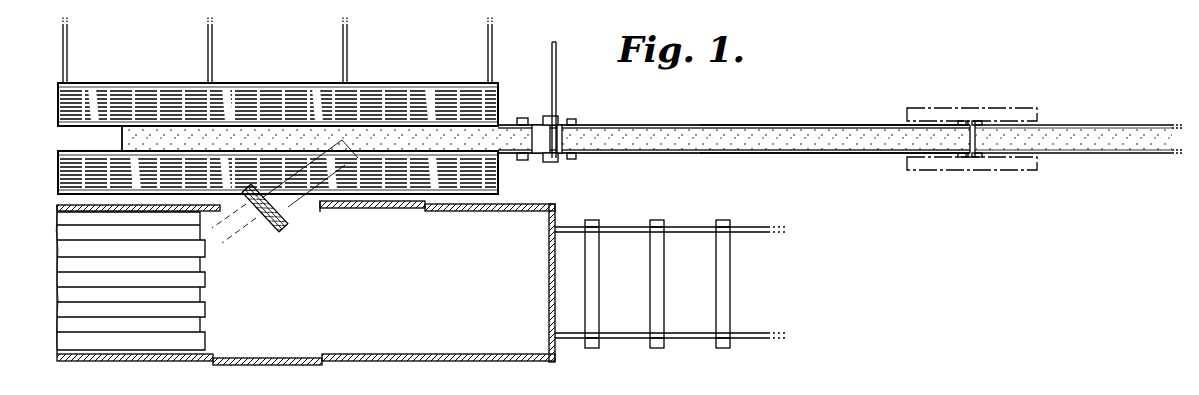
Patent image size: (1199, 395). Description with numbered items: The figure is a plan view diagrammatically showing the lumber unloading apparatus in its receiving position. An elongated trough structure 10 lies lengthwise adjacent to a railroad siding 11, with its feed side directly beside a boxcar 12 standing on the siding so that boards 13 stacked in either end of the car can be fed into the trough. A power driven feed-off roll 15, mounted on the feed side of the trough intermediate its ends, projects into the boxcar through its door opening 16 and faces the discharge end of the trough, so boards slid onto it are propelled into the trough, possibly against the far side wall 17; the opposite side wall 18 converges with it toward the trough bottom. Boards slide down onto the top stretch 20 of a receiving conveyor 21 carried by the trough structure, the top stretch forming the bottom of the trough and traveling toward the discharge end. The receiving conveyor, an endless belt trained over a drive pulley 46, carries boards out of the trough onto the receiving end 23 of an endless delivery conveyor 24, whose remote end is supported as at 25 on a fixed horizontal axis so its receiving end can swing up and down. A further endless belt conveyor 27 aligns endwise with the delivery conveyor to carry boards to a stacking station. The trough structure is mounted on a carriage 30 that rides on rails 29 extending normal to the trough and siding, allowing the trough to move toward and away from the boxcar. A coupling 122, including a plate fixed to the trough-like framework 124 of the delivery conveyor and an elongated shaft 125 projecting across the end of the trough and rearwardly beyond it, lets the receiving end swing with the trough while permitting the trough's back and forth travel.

The trough structure 10 is at (394, 65).
The railroad siding 11 is at (635, 210).
The boxcar 12 is at (426, 295).
The boards 13 is at (195, 307).
The feed-off roll 15 is at (268, 228).
The door opening 16 is at (316, 209).
The side wall 17 is at (290, 94).
The side wall 18 is at (497, 178).
The top stretch 20 is at (233, 133).
The receiving conveyor 21 is at (121, 143).
The receiving end 23 is at (607, 132).
The delivery conveyor 24 is at (730, 104).
The support 25 is at (938, 112).
The endless belt conveyor 27 is at (1100, 111).
The rails 29 is at (68, 43).
The carriage 30 is at (509, 65).
The drive pulley 46 is at (522, 160).
The coupling 122 is at (572, 101).
The trough-like framework 124 is at (684, 125).
The shaft 125 is at (558, 47).